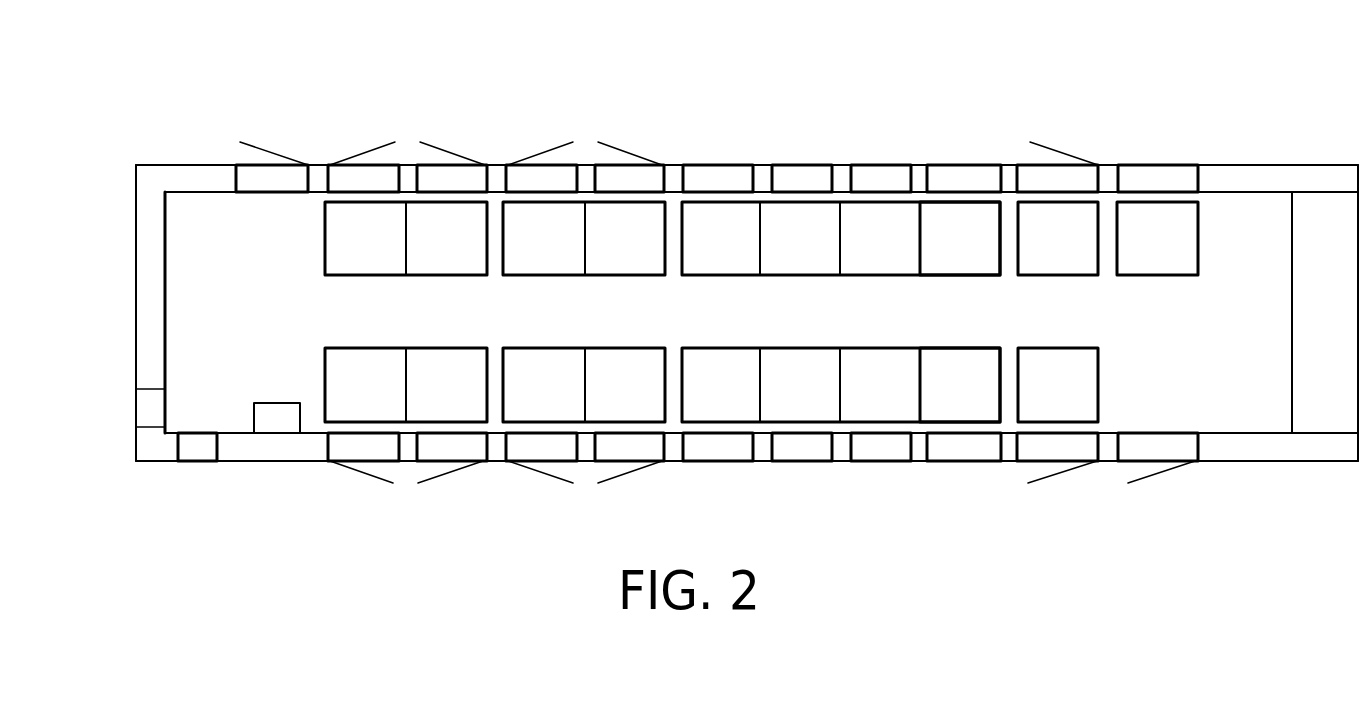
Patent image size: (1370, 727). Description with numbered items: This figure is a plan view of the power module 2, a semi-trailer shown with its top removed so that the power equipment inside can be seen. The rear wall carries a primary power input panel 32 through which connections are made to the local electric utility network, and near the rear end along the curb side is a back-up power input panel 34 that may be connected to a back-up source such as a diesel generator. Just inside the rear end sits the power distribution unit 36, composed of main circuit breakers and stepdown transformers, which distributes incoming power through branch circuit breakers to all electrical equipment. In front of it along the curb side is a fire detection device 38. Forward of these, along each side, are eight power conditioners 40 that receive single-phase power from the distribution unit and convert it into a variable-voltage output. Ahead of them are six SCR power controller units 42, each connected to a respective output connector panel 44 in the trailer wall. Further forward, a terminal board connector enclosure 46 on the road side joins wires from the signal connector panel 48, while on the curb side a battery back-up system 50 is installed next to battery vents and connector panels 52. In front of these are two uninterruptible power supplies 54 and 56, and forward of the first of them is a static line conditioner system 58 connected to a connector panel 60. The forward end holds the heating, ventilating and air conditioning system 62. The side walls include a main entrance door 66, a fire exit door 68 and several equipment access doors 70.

The power module 2 is at (776, 80).
The primary power input panel 32 is at (143, 410).
The back-up power input panel 34 is at (202, 447).
The power distribution unit 36 is at (143, 300).
The fire detection device 38 is at (270, 412).
The power conditioner 40 is at (385, 251).
The SCR power controller unit 42 is at (740, 251).
The output connector panel 44 is at (700, 164).
The terminal board connector enclosure 46 is at (980, 251).
The signal connector panel 48 is at (970, 164).
The battery back-up system 50 is at (980, 396).
The battery vents and connector panels 52 is at (975, 462).
The uninterruptible power supply 54 is at (1078, 251).
The uninterruptible power supply 56 is at (1078, 396).
The static line conditioner system 58 is at (1177, 251).
The connector panel 60 is at (1140, 164).
The heating, ventilating and air conditioning system 62 is at (1308, 334).
The main entrance door 66 is at (1183, 470).
The fire exit door 68 is at (263, 148).
The equipment access door 70 is at (445, 142).